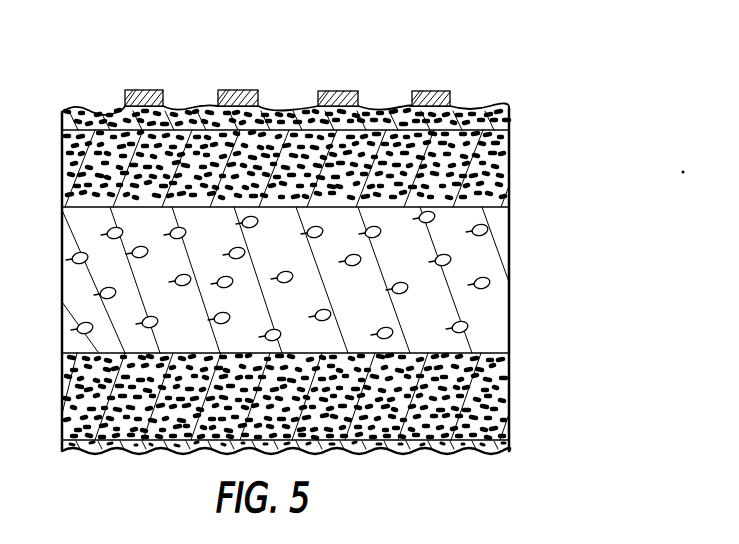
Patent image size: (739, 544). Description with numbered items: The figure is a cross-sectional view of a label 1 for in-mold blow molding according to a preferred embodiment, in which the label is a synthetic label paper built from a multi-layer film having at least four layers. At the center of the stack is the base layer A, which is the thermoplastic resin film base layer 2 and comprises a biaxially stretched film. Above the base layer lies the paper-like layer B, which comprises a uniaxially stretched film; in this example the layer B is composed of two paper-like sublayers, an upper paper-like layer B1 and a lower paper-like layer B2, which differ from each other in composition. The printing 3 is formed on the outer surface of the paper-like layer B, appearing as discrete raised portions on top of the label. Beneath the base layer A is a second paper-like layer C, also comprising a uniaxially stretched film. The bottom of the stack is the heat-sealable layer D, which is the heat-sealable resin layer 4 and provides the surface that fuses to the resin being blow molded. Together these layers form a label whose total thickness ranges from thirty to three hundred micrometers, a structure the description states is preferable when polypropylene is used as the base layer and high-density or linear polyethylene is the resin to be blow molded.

The label 1 is at (373, 248).
The printing 3 is at (150, 98).
The paper-like layer B is at (332, 155).
The paper-like layer B1 is at (509, 127).
The paper-like layer B2 is at (573, 112).
The base layer A is at (323, 280).
The thermoplastic resin film base layer 2 is at (509, 277).
The paper-like layer C is at (509, 385).
The heat-sealable layer D is at (326, 454).
The heat-sealable resin layer 4 is at (509, 455).